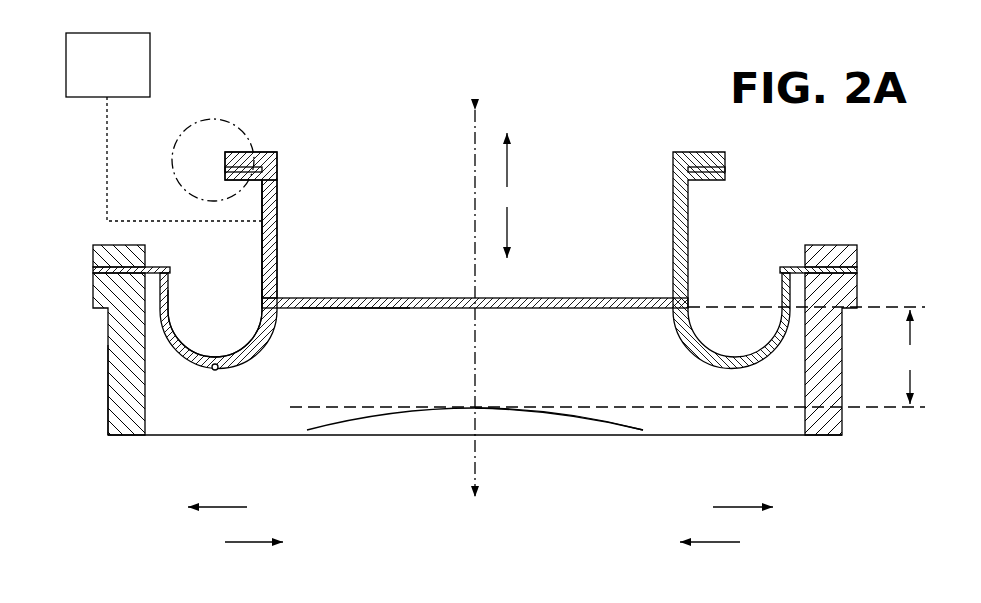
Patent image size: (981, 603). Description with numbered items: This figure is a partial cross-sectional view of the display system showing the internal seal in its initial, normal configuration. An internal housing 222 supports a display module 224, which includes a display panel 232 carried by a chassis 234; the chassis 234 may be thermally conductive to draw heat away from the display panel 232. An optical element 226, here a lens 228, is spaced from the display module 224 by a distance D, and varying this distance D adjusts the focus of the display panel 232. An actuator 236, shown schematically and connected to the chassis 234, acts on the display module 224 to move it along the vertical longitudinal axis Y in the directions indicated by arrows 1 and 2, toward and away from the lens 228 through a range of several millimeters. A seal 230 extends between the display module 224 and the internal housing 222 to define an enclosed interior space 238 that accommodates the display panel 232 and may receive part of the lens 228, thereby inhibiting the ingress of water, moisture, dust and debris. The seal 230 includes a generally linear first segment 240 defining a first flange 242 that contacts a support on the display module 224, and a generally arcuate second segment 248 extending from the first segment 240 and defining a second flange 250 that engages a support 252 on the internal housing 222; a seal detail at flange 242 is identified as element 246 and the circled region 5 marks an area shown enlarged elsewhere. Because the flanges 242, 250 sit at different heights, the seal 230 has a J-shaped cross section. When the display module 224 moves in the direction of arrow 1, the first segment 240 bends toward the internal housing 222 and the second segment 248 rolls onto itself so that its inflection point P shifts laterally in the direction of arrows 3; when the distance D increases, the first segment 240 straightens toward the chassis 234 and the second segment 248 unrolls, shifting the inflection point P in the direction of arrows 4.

The actuator 236 is at (138, 62).
The detail region of FIG. 5 is at (223, 118).
The first flange 242 is at (263, 157).
The seal strip 246 is at (232, 163).
The second flange 250 is at (110, 253).
The support 252 is at (93, 290).
The internal housing 222 is at (108, 345).
The seal 230 is at (170, 362).
The first segment 240 is at (260, 253).
The second segment 248 is at (180, 333).
The chassis 234 is at (284, 244).
The display panel 232 is at (355, 300).
The optical element 226 is at (520, 405).
The lens 228 is at (577, 413).
The display module 224 is at (355, 312).
The interior space 238 is at (420, 362).
The inflection point P is at (215, 372).
The distance D is at (607, 357).
The longitudinal axis Y is at (473, 145).
The arrow 1 is at (519, 232).
The arrow 2 is at (519, 160).
The arrows 3 is at (480, 507).
The arrows 4 is at (481, 542).